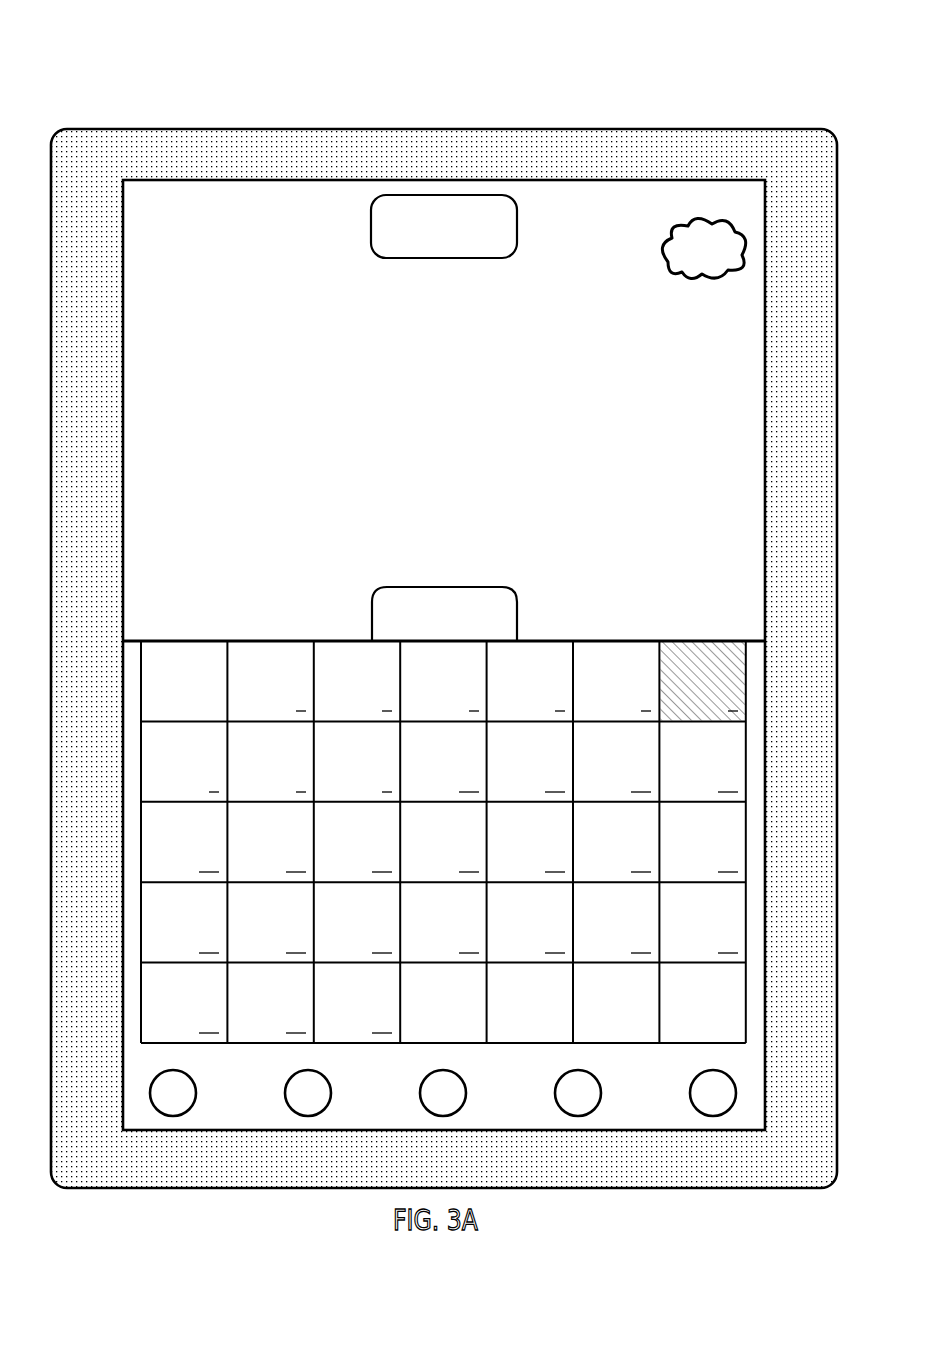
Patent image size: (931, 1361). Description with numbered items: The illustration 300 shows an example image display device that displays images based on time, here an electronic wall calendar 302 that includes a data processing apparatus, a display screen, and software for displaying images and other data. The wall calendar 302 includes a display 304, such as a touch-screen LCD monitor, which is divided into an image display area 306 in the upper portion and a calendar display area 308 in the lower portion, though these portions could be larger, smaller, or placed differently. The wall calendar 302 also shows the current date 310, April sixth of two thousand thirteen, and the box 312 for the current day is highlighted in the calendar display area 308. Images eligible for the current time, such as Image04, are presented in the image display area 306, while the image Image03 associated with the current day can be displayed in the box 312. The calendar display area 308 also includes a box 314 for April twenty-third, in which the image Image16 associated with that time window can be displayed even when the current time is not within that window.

The illustration 300 is at (82, 65).
The electronic wall calendar 302 is at (442, 129).
The display 304 is at (122, 545).
The image display area 306 is at (226, 322).
The calendar display area 308 is at (268, 642).
The current date 310 is at (652, 193).
The box for the current day 312 is at (685, 658).
The box for April 23 314 is at (338, 898).